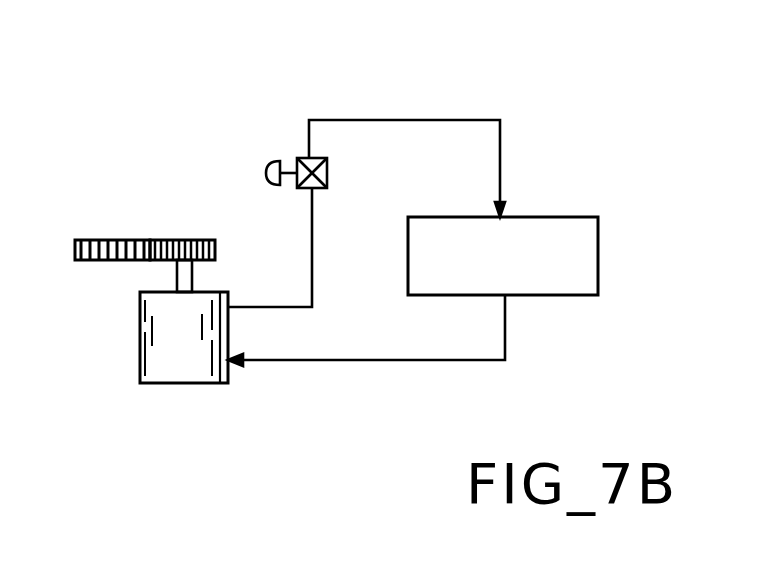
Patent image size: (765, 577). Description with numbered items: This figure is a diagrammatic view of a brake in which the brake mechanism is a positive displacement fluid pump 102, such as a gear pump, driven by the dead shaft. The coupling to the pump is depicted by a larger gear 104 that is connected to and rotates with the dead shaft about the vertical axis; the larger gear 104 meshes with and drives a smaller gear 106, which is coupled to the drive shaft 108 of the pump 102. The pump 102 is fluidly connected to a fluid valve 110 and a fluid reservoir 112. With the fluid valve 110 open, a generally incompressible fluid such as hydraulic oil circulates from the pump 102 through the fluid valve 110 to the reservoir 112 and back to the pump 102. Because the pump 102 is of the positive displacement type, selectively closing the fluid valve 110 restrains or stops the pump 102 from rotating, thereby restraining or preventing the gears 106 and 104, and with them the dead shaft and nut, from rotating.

The positive displacement fluid pump 102 is at (145, 325).
The larger gear 104 is at (112, 240).
The smaller gear 106 is at (198, 240).
The drive shaft 108 is at (177, 275).
The fluid valve 110 is at (303, 158).
The fluid reservoir 112 is at (555, 217).